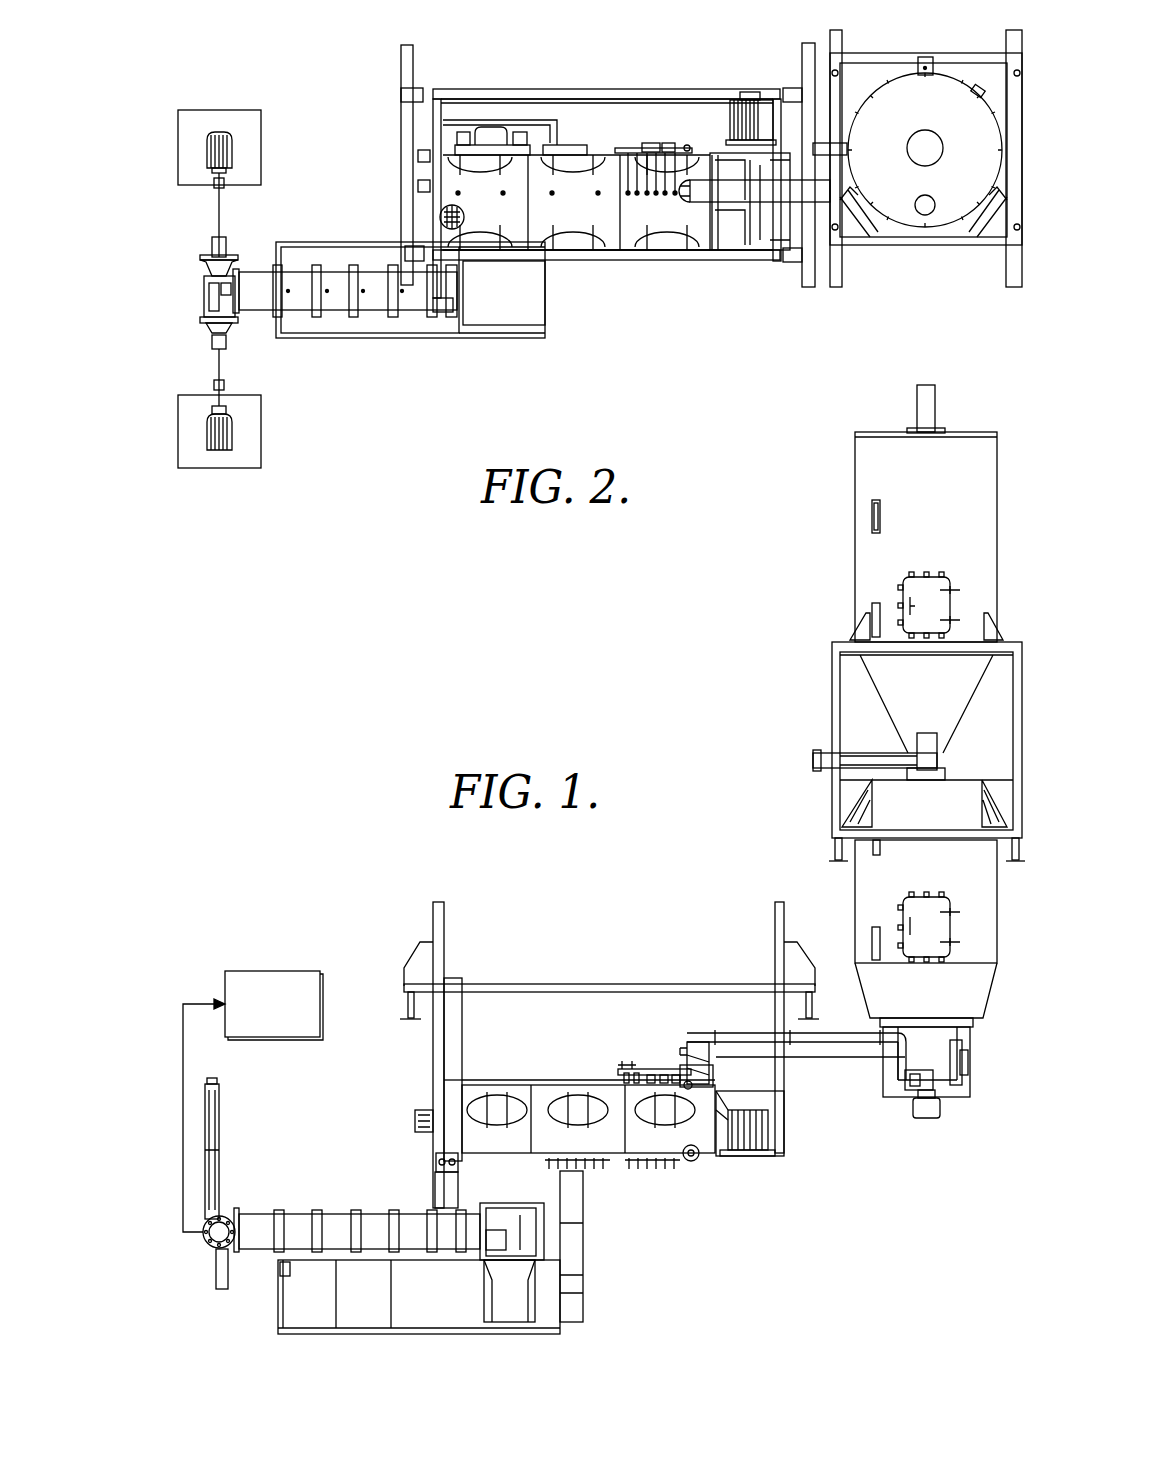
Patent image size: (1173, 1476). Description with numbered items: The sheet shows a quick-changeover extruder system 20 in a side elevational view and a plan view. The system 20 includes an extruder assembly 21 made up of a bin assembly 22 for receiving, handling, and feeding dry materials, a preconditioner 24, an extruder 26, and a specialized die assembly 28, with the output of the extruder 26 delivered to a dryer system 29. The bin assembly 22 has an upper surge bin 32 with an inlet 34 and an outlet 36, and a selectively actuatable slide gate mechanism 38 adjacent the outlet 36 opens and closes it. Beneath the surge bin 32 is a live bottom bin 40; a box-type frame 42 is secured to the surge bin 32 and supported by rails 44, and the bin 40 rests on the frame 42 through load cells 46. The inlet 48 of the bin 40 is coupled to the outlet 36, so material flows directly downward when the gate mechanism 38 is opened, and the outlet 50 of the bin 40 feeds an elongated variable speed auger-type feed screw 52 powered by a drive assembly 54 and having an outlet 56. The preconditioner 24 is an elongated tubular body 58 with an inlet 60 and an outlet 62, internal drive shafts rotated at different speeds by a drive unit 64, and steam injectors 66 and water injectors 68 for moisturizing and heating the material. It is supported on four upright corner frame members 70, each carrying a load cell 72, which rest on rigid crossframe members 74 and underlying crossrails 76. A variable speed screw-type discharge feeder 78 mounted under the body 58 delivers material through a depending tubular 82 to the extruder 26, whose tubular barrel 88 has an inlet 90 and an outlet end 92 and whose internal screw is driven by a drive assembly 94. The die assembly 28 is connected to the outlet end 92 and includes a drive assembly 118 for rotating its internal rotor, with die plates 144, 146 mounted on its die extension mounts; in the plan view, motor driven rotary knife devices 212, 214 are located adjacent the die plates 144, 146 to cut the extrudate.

In FIG. 2, the extruder system 20 is at (655, 358).
In FIG. 1, the extruder system 20 is at (356, 870).
In FIG. 2, the extruder assembly 21 is at (332, 128).
In FIG. 1, the extruder assembly 21 is at (355, 1070).
In FIG. 2, the bin assembly 22 is at (890, 275).
In FIG. 1, the bin assembly 22 is at (782, 645).
In FIG. 2, the preconditioner 24 is at (726, 278).
In FIG. 1, the preconditioner 24 is at (590, 960).
In FIG. 2, the extruder 26 is at (372, 365).
In FIG. 1, the extruder 26 is at (338, 1180).
In FIG. 2, the die assembly 28 is at (264, 348).
In FIG. 1, the die assembly 28 is at (204, 1270).
In FIG. 1, the dryer system 29 is at (236, 960).
In FIG. 2, the upper surge bin 32 is at (968, 78).
In FIG. 1, the upper surge bin 32 is at (835, 522).
In FIG. 2, the inlet 34 is at (932, 131).
In FIG. 1, the inlet 34 is at (938, 430).
In FIG. 1, the outlet 36 is at (942, 752).
In FIG. 2, the slide gate mechanism 38 is at (847, 150).
In FIG. 1, the slide gate mechanism 38 is at (822, 755).
In FIG. 1, the live bottom bin 40 is at (996, 1015).
In FIG. 2, the box-type frame 42 is at (942, 240).
In FIG. 1, the box-type frame 42 is at (833, 693).
In FIG. 2, the rails 44 is at (836, 278).
In FIG. 1, the rails 44 is at (838, 850).
In FIG. 1, the load cells 46 is at (845, 818).
In FIG. 1, the inlet 48 is at (950, 776).
In FIG. 1, the outlet 50 is at (928, 1026).
In FIG. 2, the feed screw 52 is at (697, 200).
In FIG. 1, the feed screw 52 is at (842, 1045).
In FIG. 1, the drive assembly 54 is at (942, 1088).
In FIG. 1, the outlet 56 is at (690, 1063).
In FIG. 2, the tubular body 58 is at (582, 175).
In FIG. 1, the tubular body 58 is at (650, 1158).
In FIG. 1, the inlet 60 is at (714, 1076).
In FIG. 1, the outlet 62 is at (428, 1137).
In FIG. 2, the drive unit 64 is at (520, 325).
In FIG. 1, the drive unit 64 is at (775, 1140).
In FIG. 1, the steam injectors 66 is at (587, 1170).
In FIG. 2, the water injectors 68 is at (665, 148).
In FIG. 1, the water injectors 68 is at (620, 1073).
In FIG. 2, the upright corner frame members 70 is at (440, 92).
In FIG. 1, the upright corner frame members 70 is at (445, 917).
In FIG. 2, the load cell 72 is at (404, 100).
In FIG. 1, the load cell 72 is at (410, 970).
In FIG. 2, the crossframe members 74 is at (546, 90).
In FIG. 1, the crossframe members 74 is at (630, 984).
In FIG. 2, the crossrails 76 is at (412, 50).
In FIG. 1, the crossrails 76 is at (405, 1005).
In FIG. 2, the discharge feeder 78 is at (432, 314).
In FIG. 1, the discharge feeder 78 is at (434, 1163).
In FIG. 1, the depending tubular 82 is at (440, 1198).
In FIG. 2, the tubular barrel 88 is at (336, 272).
In FIG. 1, the tubular barrel 88 is at (305, 1222).
In FIG. 1, the inlet 90 is at (480, 1195).
In FIG. 2, the outlet end 92 is at (241, 275).
In FIG. 1, the outlet end 92 is at (236, 1210).
In FIG. 1, the drive assembly 94 is at (512, 1250).
In FIG. 1, the drive assembly 118 is at (230, 1115).
In FIG. 2, the die plate 144 is at (205, 258).
In FIG. 2, the die plate 146 is at (206, 326).
In FIG. 1, the die plate 146 is at (223, 1258).
In FIG. 2, the rotary knife device 212 is at (218, 102).
In FIG. 2, the rotary knife device 214 is at (270, 482).